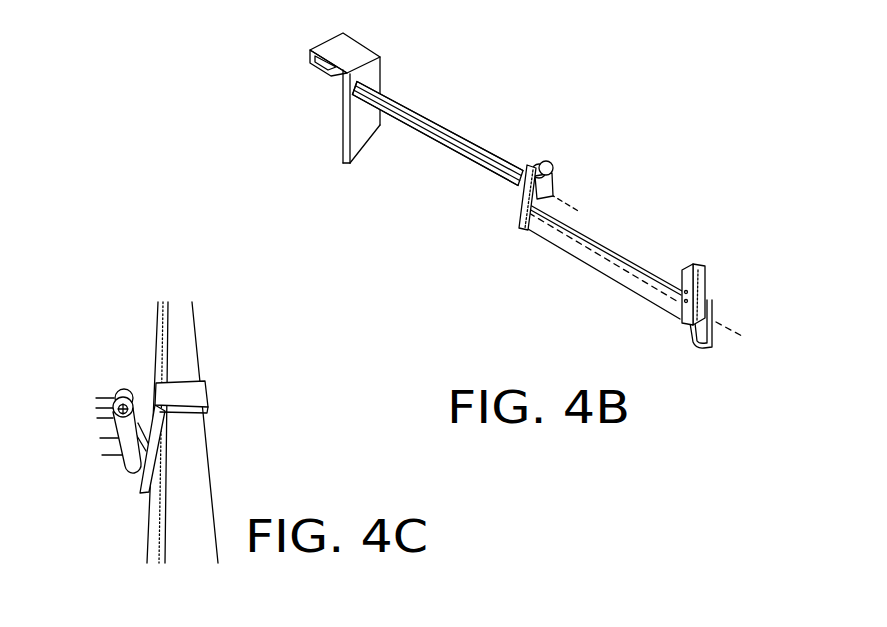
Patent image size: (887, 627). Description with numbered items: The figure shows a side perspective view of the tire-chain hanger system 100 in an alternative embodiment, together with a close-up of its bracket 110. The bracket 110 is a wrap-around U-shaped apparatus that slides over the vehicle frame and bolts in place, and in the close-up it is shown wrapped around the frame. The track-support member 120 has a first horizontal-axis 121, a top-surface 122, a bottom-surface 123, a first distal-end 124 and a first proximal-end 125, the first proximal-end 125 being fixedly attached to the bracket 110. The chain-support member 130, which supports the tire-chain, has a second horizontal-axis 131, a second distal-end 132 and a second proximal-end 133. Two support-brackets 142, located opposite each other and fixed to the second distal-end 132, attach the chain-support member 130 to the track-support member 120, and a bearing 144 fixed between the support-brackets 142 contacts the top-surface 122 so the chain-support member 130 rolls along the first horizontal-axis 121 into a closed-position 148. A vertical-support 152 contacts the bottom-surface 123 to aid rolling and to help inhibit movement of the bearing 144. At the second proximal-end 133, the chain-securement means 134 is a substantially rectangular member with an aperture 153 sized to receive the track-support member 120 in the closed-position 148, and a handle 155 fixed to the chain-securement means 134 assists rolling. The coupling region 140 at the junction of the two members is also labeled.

In FIG. 4B, the tire-chain hanger system 100 is at (530, 220).
In FIG. 4C, the tire-chain hanger system 100 is at (125, 401).
In FIG. 4B, the bracket 110 is at (345, 100).
In FIG. 4C, the bracket 110 is at (173, 388).
In FIG. 4B, the track-support member 120 is at (411, 112).
In FIG. 4B, the first horizontal-axis 121 is at (557, 195).
In FIG. 4B, the top-surface 122 is at (437, 114).
In FIG. 4B, the bottom-surface 123 is at (398, 120).
In FIG. 4B, the first distal-end 124 is at (518, 161).
In FIG. 4B, the first proximal-end 125 is at (370, 81).
In FIG. 4B, the chain-support member 130 is at (607, 312).
In FIG. 4B, the second horizontal-axis 131 is at (744, 338).
In FIG. 4B, the second distal-end 132 is at (678, 300).
In FIG. 4B, the second proximal-end 133 is at (543, 214).
In FIG. 4B, the chain-securement means 134 is at (742, 312).
In FIG. 4B, the coupling member 140 is at (527, 174).
In FIG. 4B, the support-brackets 142 is at (518, 221).
In FIG. 4B, the bearing 144 is at (545, 151).
In FIG. 4B, the closed-position 148 is at (758, 137).
In FIG. 4B, the vertical-support 152 is at (517, 204).
In FIG. 4C, the vertical-support 152 is at (121, 407).
In FIG. 4B, the aperture 153 is at (702, 282).
In FIG. 4B, the handle 155 is at (702, 353).